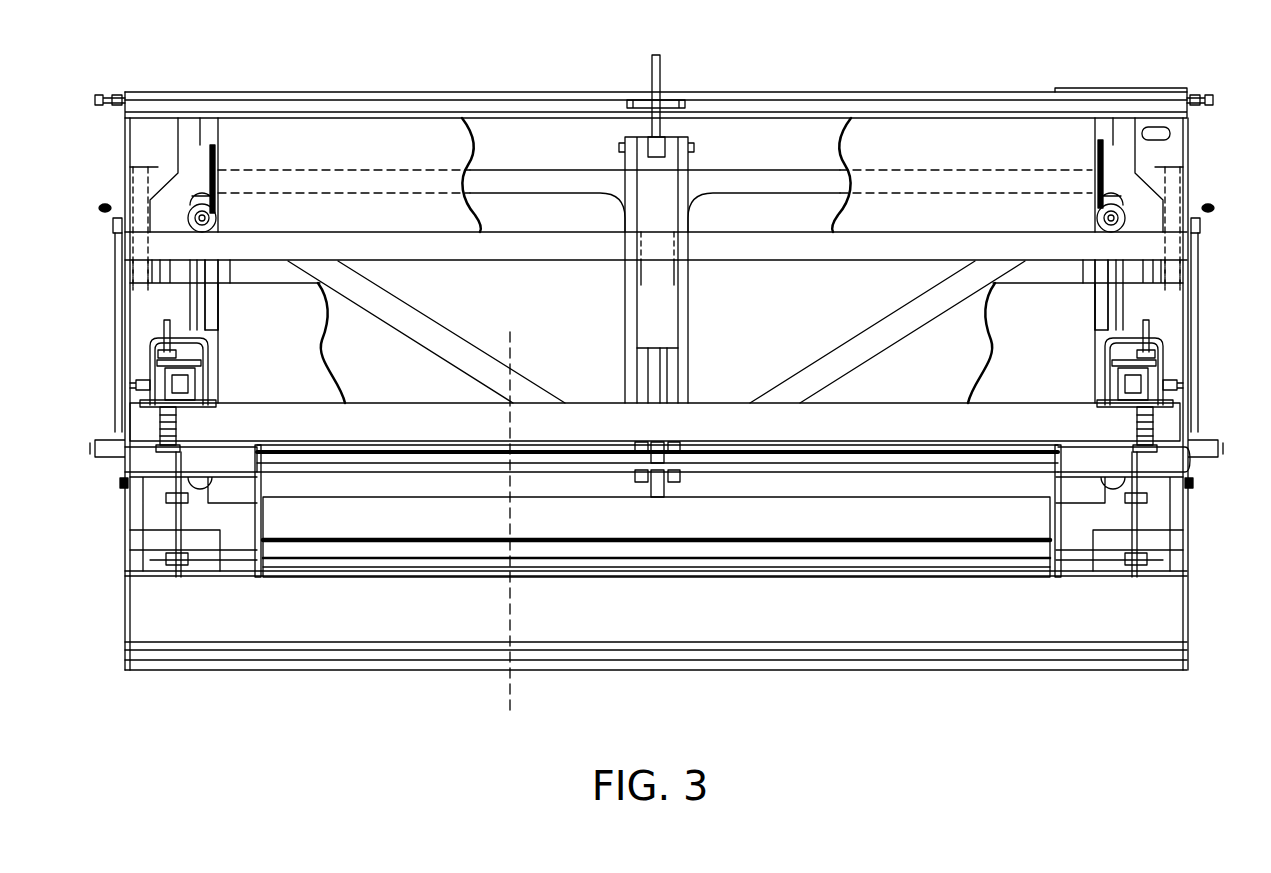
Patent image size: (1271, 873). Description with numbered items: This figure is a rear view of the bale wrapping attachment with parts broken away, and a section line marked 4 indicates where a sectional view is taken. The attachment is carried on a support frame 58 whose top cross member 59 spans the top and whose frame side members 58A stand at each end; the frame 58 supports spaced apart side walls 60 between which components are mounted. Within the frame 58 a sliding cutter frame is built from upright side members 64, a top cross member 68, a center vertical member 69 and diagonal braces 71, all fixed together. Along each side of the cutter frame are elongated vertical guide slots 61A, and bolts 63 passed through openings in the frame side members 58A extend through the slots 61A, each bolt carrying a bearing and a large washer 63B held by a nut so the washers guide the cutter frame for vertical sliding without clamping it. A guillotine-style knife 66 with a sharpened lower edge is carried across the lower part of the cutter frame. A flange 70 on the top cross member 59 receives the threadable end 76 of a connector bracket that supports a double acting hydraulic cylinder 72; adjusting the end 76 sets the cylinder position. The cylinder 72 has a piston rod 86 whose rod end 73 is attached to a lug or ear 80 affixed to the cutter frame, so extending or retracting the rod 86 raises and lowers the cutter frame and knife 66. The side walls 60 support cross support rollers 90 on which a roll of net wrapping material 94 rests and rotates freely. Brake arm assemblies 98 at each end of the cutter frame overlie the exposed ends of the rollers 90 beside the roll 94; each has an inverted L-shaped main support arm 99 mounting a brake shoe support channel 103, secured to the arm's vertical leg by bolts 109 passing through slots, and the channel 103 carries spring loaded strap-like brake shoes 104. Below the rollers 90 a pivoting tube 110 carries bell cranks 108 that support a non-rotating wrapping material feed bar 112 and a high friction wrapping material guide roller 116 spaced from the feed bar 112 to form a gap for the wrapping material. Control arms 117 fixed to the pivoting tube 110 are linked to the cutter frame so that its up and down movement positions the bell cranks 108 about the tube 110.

The support frame 58 is at (770, 88).
The frame side members 58A is at (172, 137).
The top cross member 59 is at (870, 92).
The side walls 60 is at (125, 178).
The vertical guide slots 61A is at (205, 278).
The bolts 63 is at (190, 218).
The large washer 63B is at (213, 205).
The upright side members 64 is at (148, 200).
The guillotine-style knife 66 is at (237, 540).
The top cross member 68 is at (507, 170).
The center vertical member 69 is at (628, 311).
The flange 70 is at (630, 105).
The diagonal braces 71 is at (470, 336).
The hydraulic cylinder 72 is at (678, 332).
The rod end 73 is at (640, 477).
The threadable end 76 is at (664, 78).
The lug or ear 80 is at (655, 490).
The piston rod 86 is at (648, 385).
The cross support rollers 90 is at (440, 415).
The roll of net wrapping material 94 is at (296, 368).
The brake arm assemblies 98 is at (163, 316).
The main support arm 99 is at (150, 360).
The brake shoe support channel 103 is at (175, 356).
The brake shoes 104 is at (178, 386).
The bell cranks 108 is at (266, 490).
The bolts 109 is at (142, 384).
The pivoting tube 110 is at (228, 456).
The wrapping material feed bar 112 is at (445, 560).
The wrapping material guide roller 116 is at (355, 525).
The control arms 117 is at (178, 562).
The section line 4- 4 is at (510, 332).